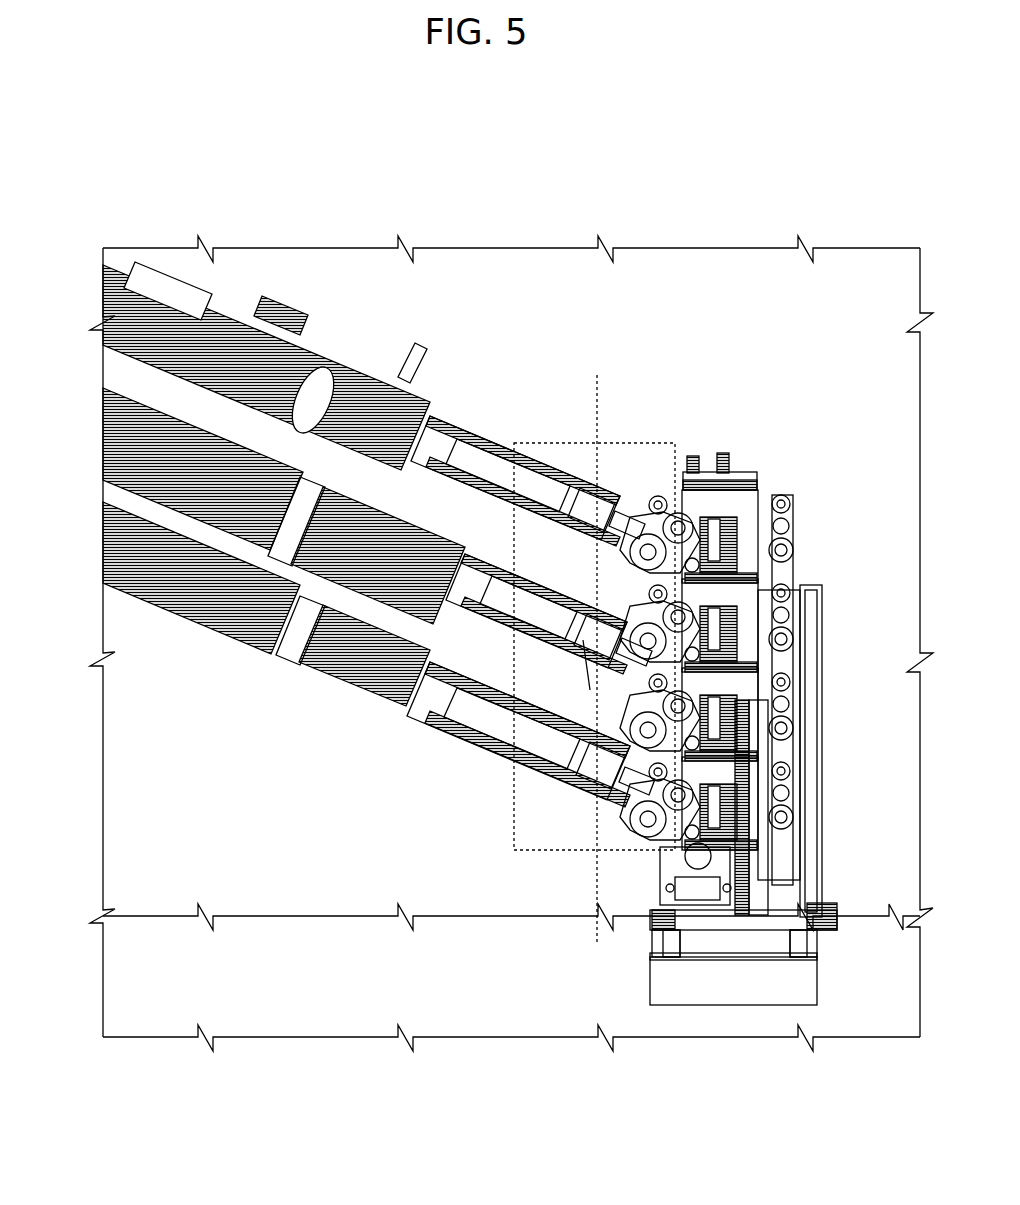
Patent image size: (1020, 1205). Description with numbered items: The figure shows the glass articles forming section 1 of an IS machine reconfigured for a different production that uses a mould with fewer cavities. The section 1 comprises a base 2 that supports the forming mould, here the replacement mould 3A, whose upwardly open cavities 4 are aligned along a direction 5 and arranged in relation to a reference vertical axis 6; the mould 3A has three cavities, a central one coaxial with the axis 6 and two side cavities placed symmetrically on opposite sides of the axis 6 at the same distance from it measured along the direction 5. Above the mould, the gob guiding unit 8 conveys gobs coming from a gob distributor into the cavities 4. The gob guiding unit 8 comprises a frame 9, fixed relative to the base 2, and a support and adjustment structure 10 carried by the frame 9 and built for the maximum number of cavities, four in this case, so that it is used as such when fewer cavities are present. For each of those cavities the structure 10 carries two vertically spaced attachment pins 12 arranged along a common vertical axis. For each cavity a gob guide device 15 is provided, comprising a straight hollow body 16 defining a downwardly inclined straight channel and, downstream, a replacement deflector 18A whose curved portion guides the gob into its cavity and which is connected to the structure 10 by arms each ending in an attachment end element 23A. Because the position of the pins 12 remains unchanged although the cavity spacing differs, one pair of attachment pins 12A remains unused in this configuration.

The glass articles forming section 1 is at (858, 232).
The base 2 is at (482, 1000).
The mould 3A is at (578, 430).
The cavities 4 is at (615, 500).
The direction 5 is at (600, 392).
The reference vertical axis 6 is at (583, 640).
The gob guiding unit 8 is at (385, 340).
The frame 9 is at (826, 877).
The support and adjustment structure 10 is at (768, 465).
The vertical attachment pins 12 is at (740, 525).
The attachment pins 12A is at (800, 738).
The gob guide device 15 is at (463, 425).
The straight hollow body 16 is at (130, 278).
The deflectors 18A is at (460, 533).
The attachment end element 23A is at (632, 540).